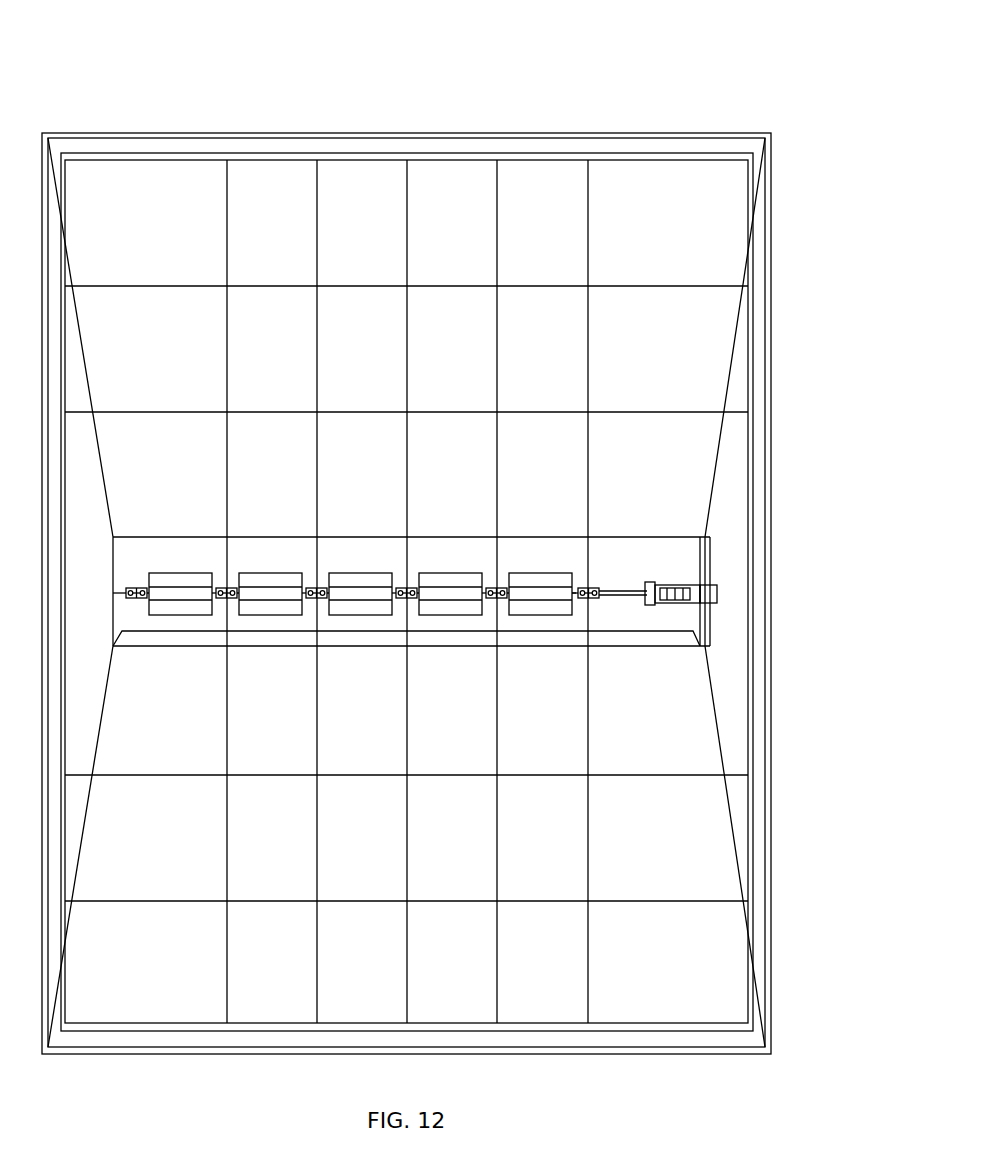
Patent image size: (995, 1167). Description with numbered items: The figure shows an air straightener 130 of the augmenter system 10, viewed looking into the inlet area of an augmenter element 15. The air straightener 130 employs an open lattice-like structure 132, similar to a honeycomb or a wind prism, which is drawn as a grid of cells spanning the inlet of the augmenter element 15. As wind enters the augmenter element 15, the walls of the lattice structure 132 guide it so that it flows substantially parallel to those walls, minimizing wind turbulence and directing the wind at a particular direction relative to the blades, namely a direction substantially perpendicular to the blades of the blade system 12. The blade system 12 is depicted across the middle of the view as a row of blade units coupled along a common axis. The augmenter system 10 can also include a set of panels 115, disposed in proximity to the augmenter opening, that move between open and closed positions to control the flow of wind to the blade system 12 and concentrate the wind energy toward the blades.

The augmenter system 10 is at (616, 58).
The augmenter element 15 is at (418, 133).
The air straightener 130 is at (748, 171).
The lattice-like structure 132 is at (590, 342).
The blade system 12 is at (437, 519).
The set of panels 115 is at (518, 557).